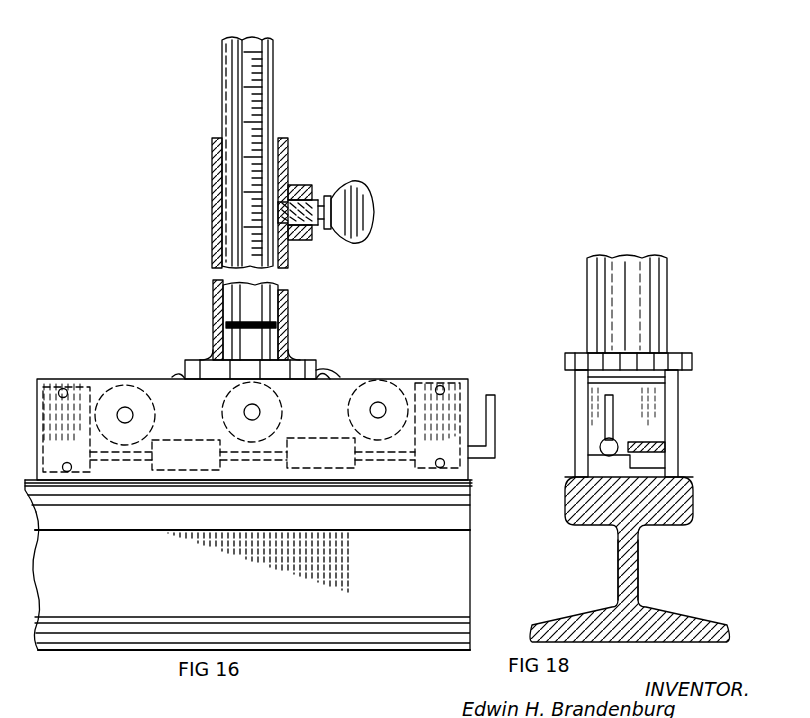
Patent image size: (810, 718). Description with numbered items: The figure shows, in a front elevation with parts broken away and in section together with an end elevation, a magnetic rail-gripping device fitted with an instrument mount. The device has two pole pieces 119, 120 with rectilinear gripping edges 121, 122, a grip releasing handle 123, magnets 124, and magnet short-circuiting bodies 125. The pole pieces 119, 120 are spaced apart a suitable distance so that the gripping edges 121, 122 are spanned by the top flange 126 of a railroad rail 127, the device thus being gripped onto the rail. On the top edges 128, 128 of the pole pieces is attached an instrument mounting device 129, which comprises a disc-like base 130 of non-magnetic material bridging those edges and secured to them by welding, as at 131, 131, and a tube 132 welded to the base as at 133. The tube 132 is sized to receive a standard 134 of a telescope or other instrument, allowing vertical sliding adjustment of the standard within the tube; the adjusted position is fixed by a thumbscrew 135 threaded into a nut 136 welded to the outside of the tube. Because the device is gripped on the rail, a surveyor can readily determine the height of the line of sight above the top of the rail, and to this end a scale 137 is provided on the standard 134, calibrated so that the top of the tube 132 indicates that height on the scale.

In FIG. 16, the pole piece 119 is at (370, 379).
In FIG. 18, the pole piece 119 is at (575, 424).
In FIG. 18, the pole piece 120 is at (678, 404).
In FIG. 16, the rectilinear gripping edge 121 is at (378, 480).
In FIG. 18, the rectilinear gripping edge 121 is at (576, 477).
In FIG. 18, the rectilinear gripping edge 122 is at (678, 477).
In FIG. 16, the grip releasing handle 123 is at (495, 406).
In FIG. 18, the grip releasing handle 123 is at (613, 420).
In FIG. 16, the magnet 124 is at (155, 412).
In FIG. 16, the magnet short-circuiting body 125 is at (160, 470).
In FIG. 18, the top flange 126 is at (566, 508).
In FIG. 16, the railroad rail 127 is at (214, 556).
In FIG. 18, the railroad rail 127 is at (638, 568).
In FIG. 16, the top edge 128 is at (340, 377).
In FIG. 18, the top edge 128 is at (580, 353).
In FIG. 16, the instrument mounting device 129 is at (210, 300).
In FIG. 16, the disc-like base 130 is at (300, 360).
In FIG. 16, the weld 131 is at (178, 375).
In FIG. 16, the tube 132 is at (212, 200).
In FIG. 16, the weld 133 is at (216, 355).
In FIG. 16, the standard 134 is at (270, 62).
In FIG. 16, the thumbscrew 135 is at (362, 212).
In FIG. 16, the nut 136 is at (298, 185).
In FIG. 16, the scale 137 is at (242, 82).